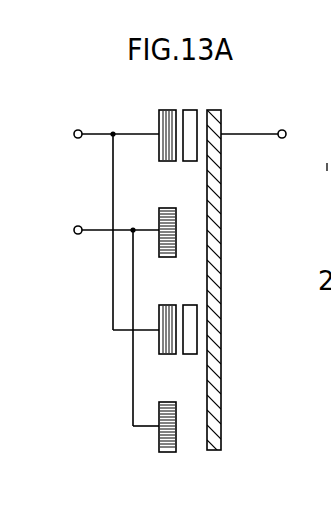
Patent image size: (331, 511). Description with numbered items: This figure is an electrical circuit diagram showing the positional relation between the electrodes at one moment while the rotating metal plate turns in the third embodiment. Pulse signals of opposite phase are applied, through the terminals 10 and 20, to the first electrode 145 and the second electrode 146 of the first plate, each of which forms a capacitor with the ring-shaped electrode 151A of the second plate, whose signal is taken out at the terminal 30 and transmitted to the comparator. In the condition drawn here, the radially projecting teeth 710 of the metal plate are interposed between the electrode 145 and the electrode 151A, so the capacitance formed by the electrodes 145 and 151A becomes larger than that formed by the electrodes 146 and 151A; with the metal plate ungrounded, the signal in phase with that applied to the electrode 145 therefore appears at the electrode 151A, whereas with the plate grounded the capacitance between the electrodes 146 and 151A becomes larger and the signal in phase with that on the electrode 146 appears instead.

The first input terminal 10 is at (74, 126).
The second input terminal 20 is at (77, 226).
The output terminal 30 is at (283, 128).
The first electrode 145 is at (164, 109).
The second electrode 146 is at (176, 240).
The projecting teeth 710 is at (188, 109).
The ring-shaped electrode 151A is at (240, 182).